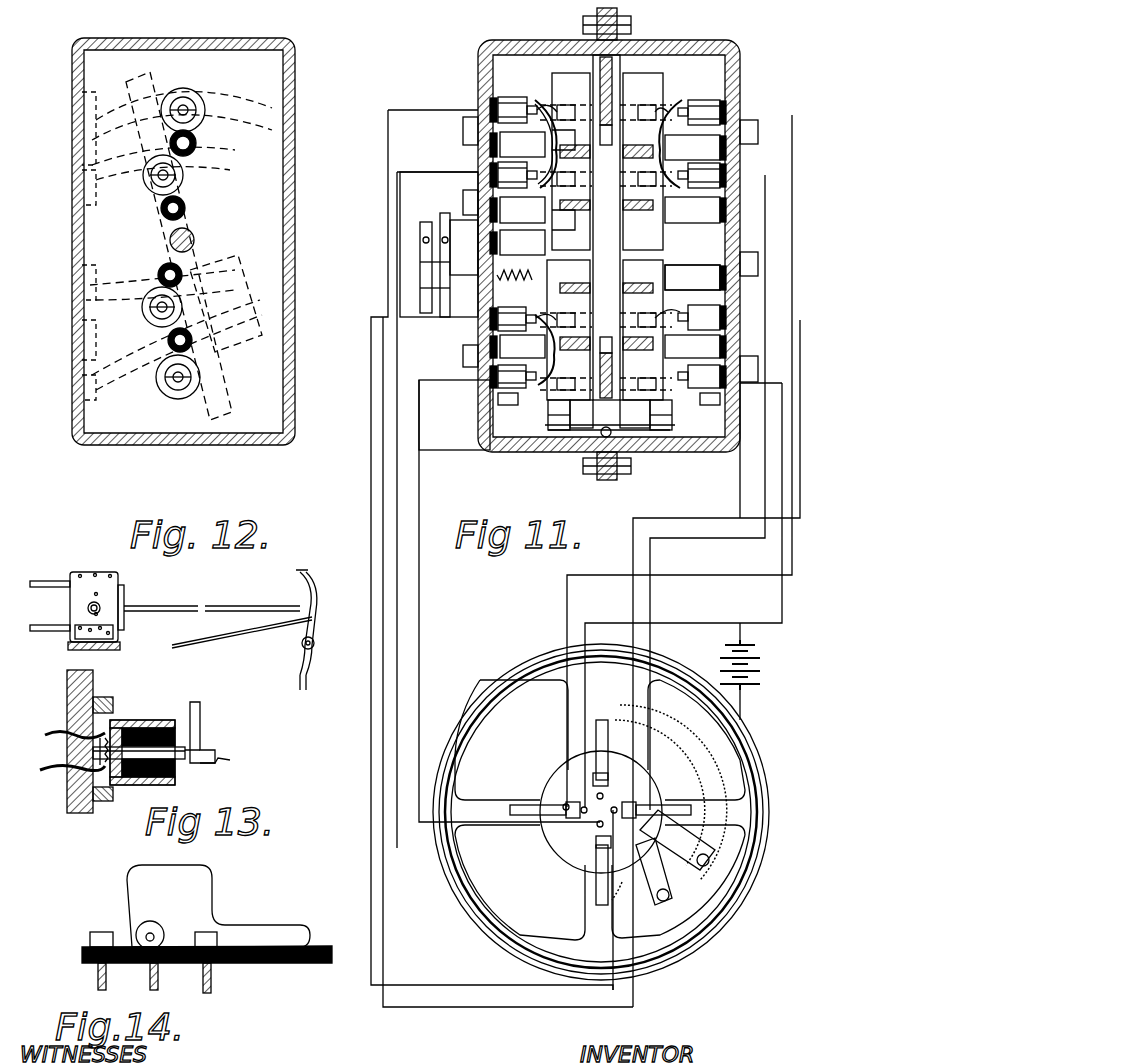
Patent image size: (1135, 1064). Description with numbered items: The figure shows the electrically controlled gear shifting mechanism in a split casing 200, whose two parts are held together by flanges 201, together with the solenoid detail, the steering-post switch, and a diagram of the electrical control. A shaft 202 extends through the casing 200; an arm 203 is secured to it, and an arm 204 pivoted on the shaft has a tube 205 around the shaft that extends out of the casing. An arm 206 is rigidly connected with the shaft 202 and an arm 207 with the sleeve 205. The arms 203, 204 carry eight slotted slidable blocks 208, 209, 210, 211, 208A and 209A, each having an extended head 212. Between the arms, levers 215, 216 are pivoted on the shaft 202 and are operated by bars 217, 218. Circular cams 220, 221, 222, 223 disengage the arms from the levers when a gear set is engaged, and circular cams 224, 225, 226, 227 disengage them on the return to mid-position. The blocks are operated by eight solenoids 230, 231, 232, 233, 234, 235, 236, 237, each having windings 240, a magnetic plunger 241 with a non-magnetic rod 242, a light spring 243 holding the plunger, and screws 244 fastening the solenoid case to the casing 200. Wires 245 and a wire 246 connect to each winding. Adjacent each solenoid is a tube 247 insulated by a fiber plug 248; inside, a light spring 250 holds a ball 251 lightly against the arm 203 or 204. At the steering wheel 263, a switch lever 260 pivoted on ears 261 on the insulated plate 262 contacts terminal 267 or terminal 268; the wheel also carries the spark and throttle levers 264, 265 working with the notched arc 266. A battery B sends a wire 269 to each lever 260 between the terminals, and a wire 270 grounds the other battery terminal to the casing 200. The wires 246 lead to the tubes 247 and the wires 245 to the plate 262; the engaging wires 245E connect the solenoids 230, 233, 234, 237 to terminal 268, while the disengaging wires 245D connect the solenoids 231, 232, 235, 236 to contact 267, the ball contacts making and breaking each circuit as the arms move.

In FIG. 12, the split casing 200 is at (295, 130).
In FIG. 11, the split casing 200 is at (480, 448).
In FIG. 13, the split casing 200 is at (112, 600).
In FIG. 11, the flanges 201 is at (625, 22).
In FIG. 12, the shaft 202 is at (196, 241).
In FIG. 11, the shaft 202 is at (692, 274).
In FIG. 13, the shaft 202 is at (88, 608).
In FIG. 11, the arm 203 is at (648, 408).
In FIG. 11, the arm 204 is at (565, 405).
In FIG. 11, the tube 205 is at (460, 222).
In FIG. 11, the arm 206 is at (420, 283).
In FIG. 11, the arm 207 is at (490, 350).
In FIG. 11, the slidable block 208 is at (690, 102).
In FIG. 13, the slidable block 208 is at (215, 760).
In FIG. 11, the slidable block 208A is at (538, 100).
In FIG. 11, the slidable block 209 is at (695, 210).
In FIG. 11, the slidable block 209A is at (495, 182).
In FIG. 11, the slidable block 210 is at (548, 300).
In FIG. 11, the slidable block 211 is at (540, 465).
In FIG. 13, the extended head 212 is at (200, 706).
In FIG. 11, the lever 215 is at (608, 297).
In FIG. 11, the lever 216 is at (612, 165).
In FIG. 11, the bar 217 is at (609, 365).
In FIG. 13, the bar 217 is at (50, 631).
In FIG. 11, the bar 218 is at (612, 90).
In FIG. 13, the bar 218 is at (50, 587).
In FIG. 12, the circular cam 220 is at (235, 100).
In FIG. 11, the circular cam 220 is at (572, 112).
In FIG. 12, the circular cam 221 is at (245, 380).
In FIG. 11, the circular cam 221 is at (597, 333).
In FIG. 11, the circular cam 222 is at (640, 398).
In FIG. 11, the circular cam 223 is at (662, 110).
In FIG. 12, the circular cam 224 is at (128, 262).
In FIG. 11, the circular cam 224 is at (607, 227).
In FIG. 12, the circular cam 225 is at (115, 282).
In FIG. 11, the circular cam 225 is at (608, 317).
In FIG. 11, the circular cam 226 is at (635, 285).
In FIG. 11, the circular cam 227 is at (643, 258).
In FIG. 12, the solenoid 230 is at (200, 82).
In FIG. 11, the solenoid 230 is at (500, 110).
In FIG. 13, the solenoid 230 is at (140, 720).
In FIG. 12, the solenoid 231 is at (152, 175).
In FIG. 11, the solenoid 231 is at (500, 170).
In FIG. 12, the solenoid 232 is at (150, 318).
In FIG. 11, the solenoid 232 is at (440, 312).
In FIG. 12, the solenoid 233 is at (160, 385).
In FIG. 11, the solenoid 233 is at (490, 378).
In FIG. 11, the solenoid 234 is at (705, 112).
In FIG. 11, the solenoid 235 is at (730, 160).
In FIG. 11, the solenoid 236 is at (735, 305).
In FIG. 11, the solenoid 237 is at (738, 385).
In FIG. 13, the windings 240 is at (138, 790).
In FIG. 13, the magnetic plunger 241 is at (75, 810).
In FIG. 13, the non-magnetic rod 242 is at (178, 770).
In FIG. 13, the light spring 243 is at (95, 753).
In FIG. 13, the screws 244 is at (110, 697).
In FIG. 13, the electric wires 245 is at (48, 780).
In FIG. 14, the electric wires 245 is at (98, 975).
In FIG. 11, the wires 245D is at (630, 568).
In FIG. 11, the wires 245E is at (380, 232).
In FIG. 11, the wire 246 is at (478, 120).
In FIG. 13, the wire 246 is at (48, 728).
In FIG. 11, the tube 247 is at (460, 372).
In FIG. 11, the fiber plug 248 is at (463, 127).
In FIG. 13, the fiber plug 248 is at (95, 592).
In FIG. 11, the light spring 250 is at (517, 255).
In FIG. 11, the ball 251 is at (545, 205).
In FIG. 11, the switch lever 260 is at (600, 742).
In FIG. 14, the switch lever 260 is at (218, 906).
In FIG. 14, the ears 261 is at (138, 935).
In FIG. 11, the insulated plate 262 is at (545, 778).
In FIG. 14, the insulated plate 262 is at (260, 966).
In FIG. 11, the steering wheel 263 is at (495, 910).
In FIG. 11, the spark advancing lever 264 is at (680, 900).
In FIG. 11, the throttle advancing lever 265 is at (680, 858).
In FIG. 11, the notched arc 266 is at (680, 895).
In FIG. 11, the terminal 267 is at (598, 830).
In FIG. 14, the terminal 267 is at (208, 935).
In FIG. 11, the terminal 268 is at (598, 825).
In FIG. 14, the terminal 268 is at (90, 940).
In FIG. 11, the wire 269 is at (742, 710).
In FIG. 14, the wire 269 is at (148, 990).
In FIG. 11, the wire 270 is at (740, 505).
In FIG. 11, the source of electric current B is at (752, 665).